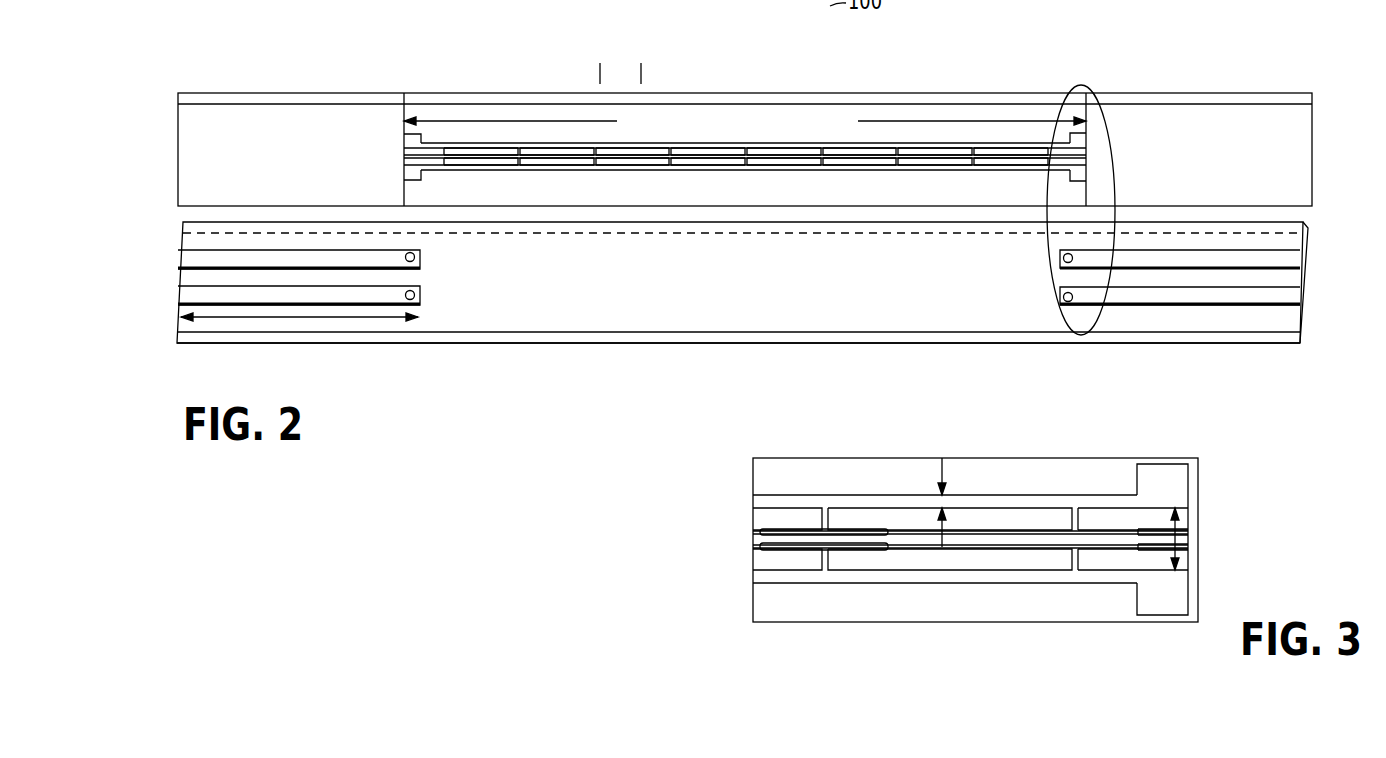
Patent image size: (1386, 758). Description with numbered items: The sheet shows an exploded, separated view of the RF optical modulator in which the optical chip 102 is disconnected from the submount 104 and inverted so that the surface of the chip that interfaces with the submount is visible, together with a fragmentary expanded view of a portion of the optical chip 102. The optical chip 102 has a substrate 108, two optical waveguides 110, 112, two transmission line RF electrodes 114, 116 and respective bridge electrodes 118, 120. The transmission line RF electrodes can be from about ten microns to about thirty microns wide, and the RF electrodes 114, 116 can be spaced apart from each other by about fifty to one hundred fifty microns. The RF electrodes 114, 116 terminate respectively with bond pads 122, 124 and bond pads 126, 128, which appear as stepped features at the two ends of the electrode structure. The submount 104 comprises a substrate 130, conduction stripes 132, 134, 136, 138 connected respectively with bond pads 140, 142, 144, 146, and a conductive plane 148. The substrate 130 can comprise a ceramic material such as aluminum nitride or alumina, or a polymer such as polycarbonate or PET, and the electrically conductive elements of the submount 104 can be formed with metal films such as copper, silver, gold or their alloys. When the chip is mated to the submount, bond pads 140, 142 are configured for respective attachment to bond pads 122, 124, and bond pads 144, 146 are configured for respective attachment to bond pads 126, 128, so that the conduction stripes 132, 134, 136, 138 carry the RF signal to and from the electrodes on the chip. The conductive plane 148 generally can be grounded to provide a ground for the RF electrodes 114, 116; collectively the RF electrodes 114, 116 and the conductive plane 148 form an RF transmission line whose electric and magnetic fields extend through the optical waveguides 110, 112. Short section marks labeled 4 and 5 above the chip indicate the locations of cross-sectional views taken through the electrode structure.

In FIG. 2, the optical chip 102 is at (336, 84).
In FIG. 2, the submount 104 is at (453, 324).
In FIG. 2, the substrate 108 is at (277, 105).
In FIG. 2, the optical waveguide 110 is at (642, 147).
In FIG. 2, the optical waveguide 112 is at (578, 160).
In FIG. 3, the optical waveguide 112 is at (970, 539).
In FIG. 2, the transmission line RF electrode 114 is at (838, 143).
In FIG. 3, the transmission line RF electrode 114 is at (915, 495).
In FIG. 2, the transmission line RF electrode 116 is at (812, 168).
In FIG. 3, the transmission line RF electrode 116 is at (975, 582).
In FIG. 2, the bridge electrode 118 is at (520, 148).
In FIG. 3, the bridge electrode 118 is at (820, 518).
In FIG. 2, the bridge electrode 120 is at (521, 160).
In FIG. 3, the bridge electrode 120 is at (820, 558).
In FIG. 2, the bond pad 122 is at (404, 138).
In FIG. 2, the bond pad 124 is at (1080, 137).
In FIG. 3, the bond pad 124 is at (1162, 478).
In FIG. 2, the bond pad 126 is at (404, 178).
In FIG. 2, the bond pad 128 is at (1078, 177).
In FIG. 3, the bond pad 128 is at (1160, 605).
In FIG. 2, the substrate 130 is at (652, 320).
In FIG. 2, the conduction stripe 132 is at (275, 262).
In FIG. 2, the conduction stripe 134 is at (1290, 262).
In FIG. 2, the conduction stripe 136 is at (320, 296).
In FIG. 2, the conduction stripe 138 is at (1128, 318).
In FIG. 2, the bond pad 140 is at (418, 258).
In FIG. 2, the bond pad 142 is at (1062, 258).
In FIG. 2, the bond pad 144 is at (408, 296).
In FIG. 2, the bond pad 146 is at (1062, 297).
In FIG. 2, the conductive plane 148 is at (840, 345).
In FIG. 2, the section line for FIG. 4 is at (641, 59).
In FIG. 2, the section line for FIG. 5 is at (600, 59).